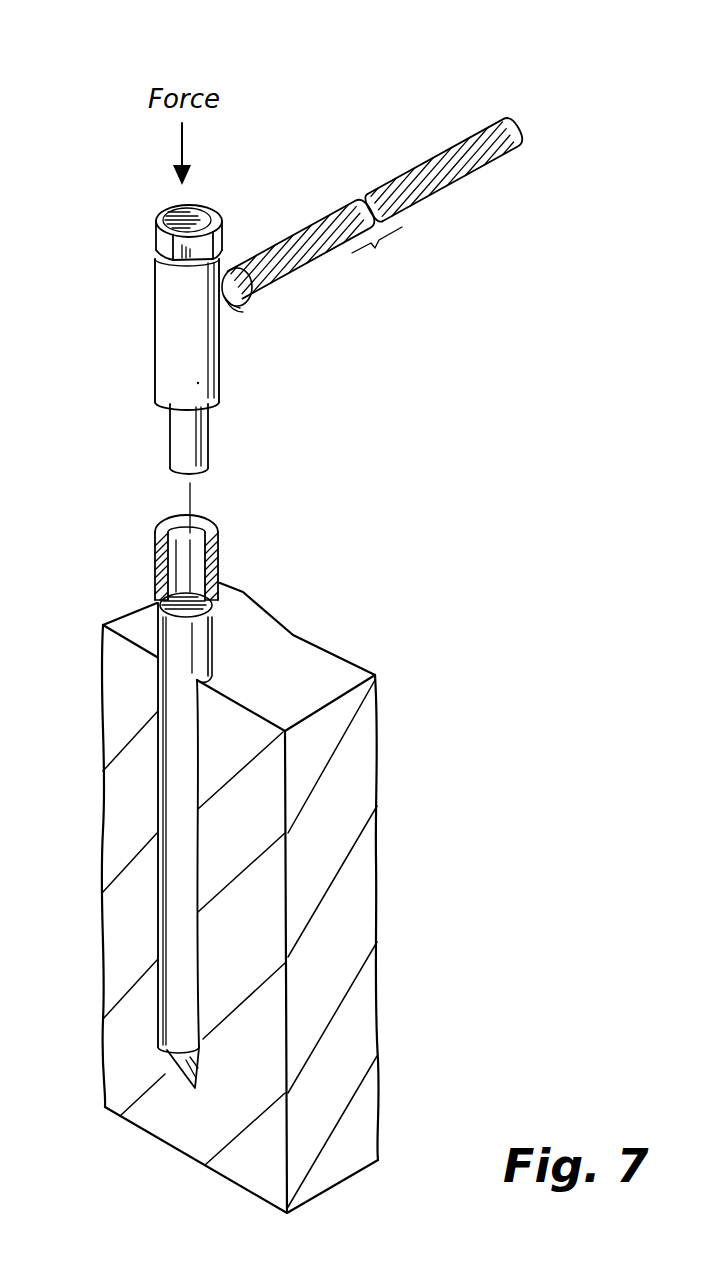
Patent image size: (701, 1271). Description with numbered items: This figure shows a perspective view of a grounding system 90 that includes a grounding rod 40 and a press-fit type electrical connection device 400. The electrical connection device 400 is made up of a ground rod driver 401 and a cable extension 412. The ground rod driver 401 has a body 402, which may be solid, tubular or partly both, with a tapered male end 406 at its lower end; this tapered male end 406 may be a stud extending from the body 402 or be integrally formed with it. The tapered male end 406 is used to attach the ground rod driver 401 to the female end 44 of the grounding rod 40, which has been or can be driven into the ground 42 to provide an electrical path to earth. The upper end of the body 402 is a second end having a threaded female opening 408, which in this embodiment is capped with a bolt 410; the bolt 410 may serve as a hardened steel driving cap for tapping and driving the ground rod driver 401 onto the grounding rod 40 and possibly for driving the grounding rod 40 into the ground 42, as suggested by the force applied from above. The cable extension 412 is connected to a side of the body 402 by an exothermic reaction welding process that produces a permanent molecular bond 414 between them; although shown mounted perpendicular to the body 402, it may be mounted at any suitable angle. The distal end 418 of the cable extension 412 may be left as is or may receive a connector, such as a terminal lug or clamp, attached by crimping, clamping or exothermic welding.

The electrical connection device 400 is at (280, 181).
The ground rod driver 401 is at (146, 355).
The body 402 is at (166, 341).
The tapered male end 406 is at (206, 438).
The threaded female opening 408 is at (145, 236).
The bolt 410 is at (220, 214).
The cable extension 412 is at (385, 265).
The permanent molecular bond 414 is at (238, 303).
The distal end 418 is at (484, 124).
The grounding system 90 is at (85, 570).
The female end 44 is at (184, 545).
The grounding rod 40 is at (165, 640).
The ground 42 is at (318, 657).